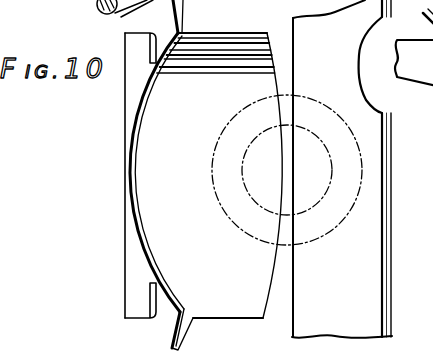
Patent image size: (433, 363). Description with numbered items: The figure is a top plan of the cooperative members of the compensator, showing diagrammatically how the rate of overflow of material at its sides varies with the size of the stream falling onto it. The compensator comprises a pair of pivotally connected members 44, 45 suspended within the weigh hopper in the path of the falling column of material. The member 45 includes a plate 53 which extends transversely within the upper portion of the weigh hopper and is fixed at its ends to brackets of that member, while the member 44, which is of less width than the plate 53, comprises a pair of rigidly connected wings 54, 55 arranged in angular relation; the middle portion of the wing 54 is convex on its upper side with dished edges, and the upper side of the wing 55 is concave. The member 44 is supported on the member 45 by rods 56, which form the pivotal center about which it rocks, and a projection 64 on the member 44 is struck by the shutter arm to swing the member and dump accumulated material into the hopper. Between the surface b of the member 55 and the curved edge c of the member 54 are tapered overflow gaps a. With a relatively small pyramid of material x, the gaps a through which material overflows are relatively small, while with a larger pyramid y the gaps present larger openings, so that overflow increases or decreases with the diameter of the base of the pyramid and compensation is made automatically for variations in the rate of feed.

The compensator member 44 is at (118, 256).
The compensator member 45 is at (398, 277).
The plate 53 is at (378, 232).
The wing 54 is at (133, 203).
The wing 55 is at (248, 313).
The rod 56 is at (116, 18).
The projection 64 is at (187, 22).
The overflow gap a is at (281, 78).
The surface b is at (292, 287).
The curved edge c is at (275, 272).
The pyramid of material x is at (259, 200).
The pyramid of material y is at (236, 223).